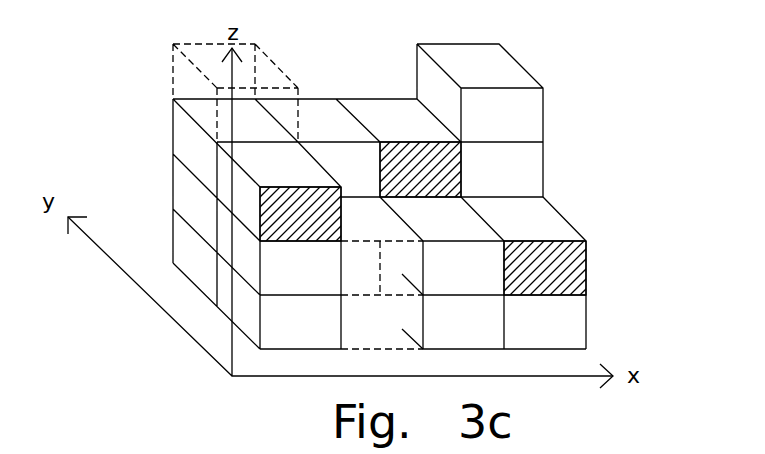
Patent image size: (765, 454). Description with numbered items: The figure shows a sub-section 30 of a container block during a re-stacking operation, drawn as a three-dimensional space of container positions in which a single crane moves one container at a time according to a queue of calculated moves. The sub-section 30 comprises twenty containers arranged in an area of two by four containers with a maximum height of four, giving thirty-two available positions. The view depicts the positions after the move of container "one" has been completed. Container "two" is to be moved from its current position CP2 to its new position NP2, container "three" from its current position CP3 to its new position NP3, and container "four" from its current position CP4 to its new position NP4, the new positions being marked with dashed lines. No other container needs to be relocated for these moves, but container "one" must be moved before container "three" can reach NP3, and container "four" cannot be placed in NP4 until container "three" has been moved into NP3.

The sub-section 30 is at (431, 196).
The current position of container "2" CP2 is at (542, 268).
The current position of container "3" CP3 is at (417, 169).
The current position of container "4" CP4 is at (298, 214).
The new position of container "2" NP2 is at (522, 256).
The new position of container "3" NP3 is at (342, 307).
The new position of container "4" NP4 is at (316, 196).